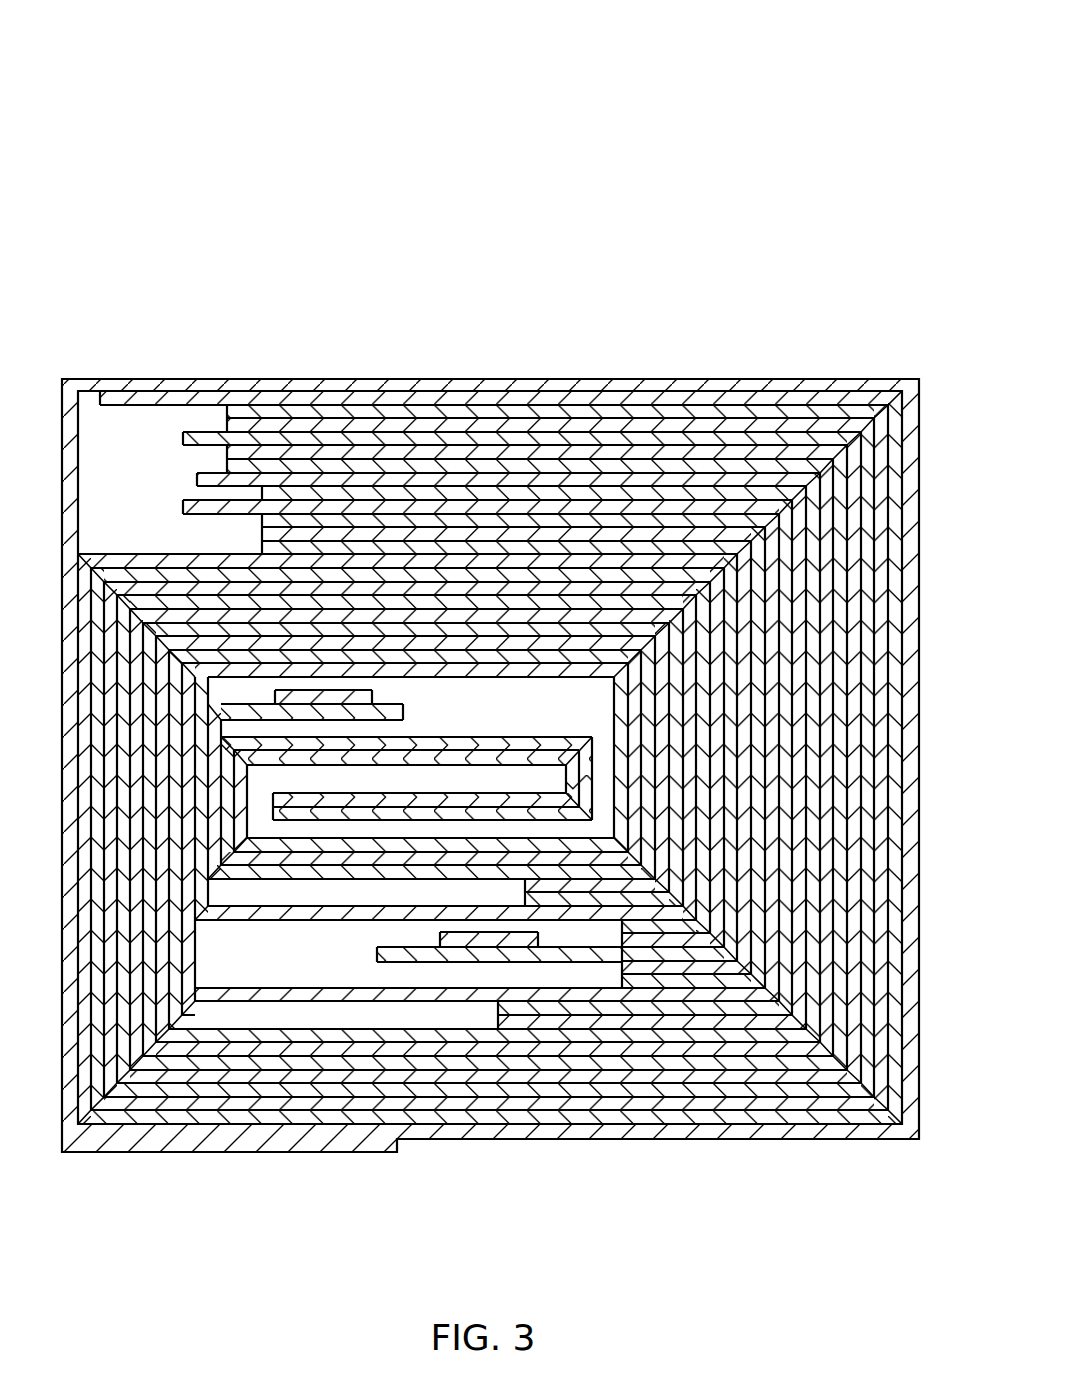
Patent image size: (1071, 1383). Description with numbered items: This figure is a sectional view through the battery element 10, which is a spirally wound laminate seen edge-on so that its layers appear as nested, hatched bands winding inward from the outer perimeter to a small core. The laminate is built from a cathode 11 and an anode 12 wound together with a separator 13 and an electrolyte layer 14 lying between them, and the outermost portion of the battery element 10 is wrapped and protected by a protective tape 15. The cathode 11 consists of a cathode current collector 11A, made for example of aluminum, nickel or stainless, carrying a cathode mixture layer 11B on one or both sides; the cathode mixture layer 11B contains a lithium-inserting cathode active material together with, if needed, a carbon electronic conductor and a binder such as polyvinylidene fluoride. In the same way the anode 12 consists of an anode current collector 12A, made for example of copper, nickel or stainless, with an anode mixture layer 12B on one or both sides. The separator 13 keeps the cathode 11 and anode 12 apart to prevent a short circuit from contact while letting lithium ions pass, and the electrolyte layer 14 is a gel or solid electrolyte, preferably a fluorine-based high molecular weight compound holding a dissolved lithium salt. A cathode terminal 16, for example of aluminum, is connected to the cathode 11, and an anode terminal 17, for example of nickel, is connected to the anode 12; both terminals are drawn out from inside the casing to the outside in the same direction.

The battery element 10 is at (732, 95).
The cathode 11 is at (373, 240).
The cathode current collector 11A is at (222, 478).
The cathode mixture layer 11B is at (352, 497).
The anode 12 is at (605, 240).
The anode current collector 12A is at (442, 393).
The anode mixture layer 12B is at (568, 545).
The separator 13 is at (625, 525).
The electrolyte layer 14 is at (738, 533).
The protective tape 15 is at (862, 383).
The cathode terminal 16 is at (297, 700).
The anode terminal 17 is at (488, 942).